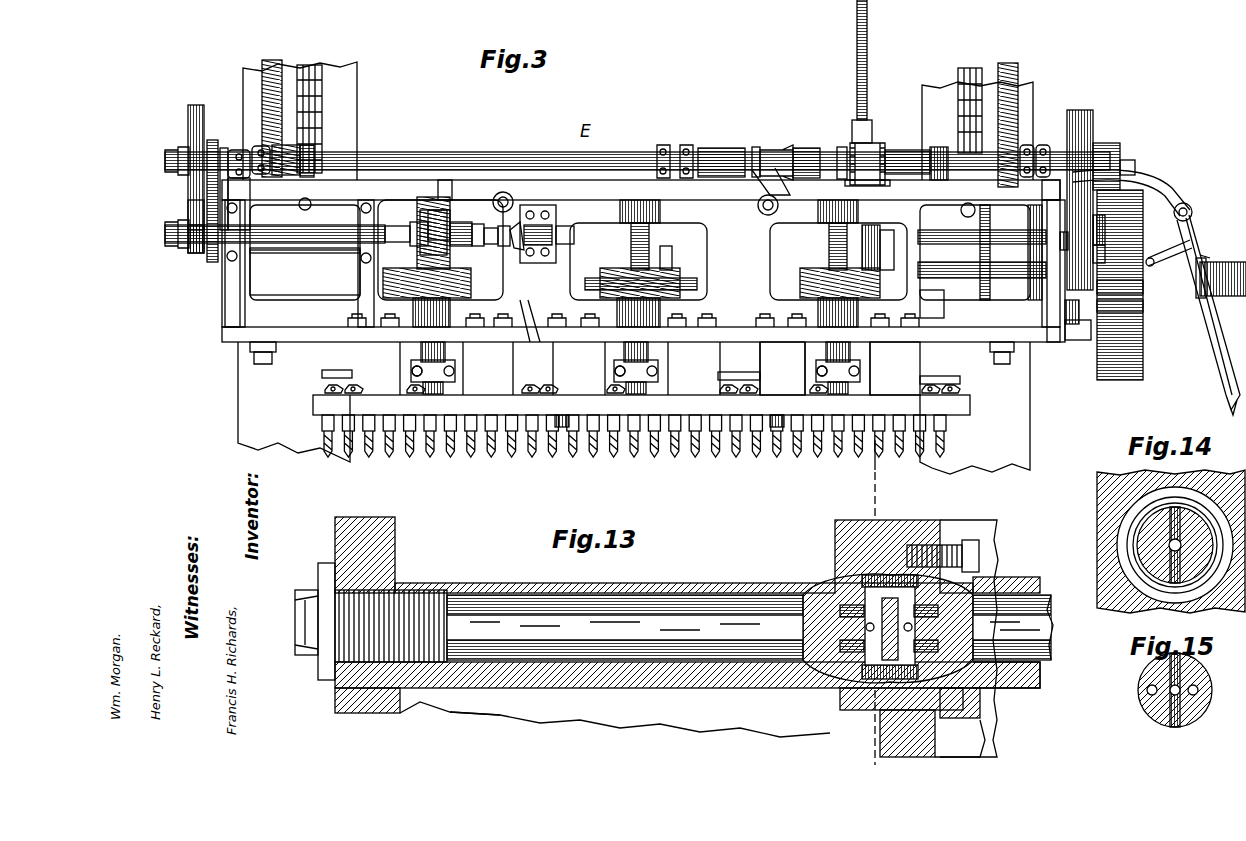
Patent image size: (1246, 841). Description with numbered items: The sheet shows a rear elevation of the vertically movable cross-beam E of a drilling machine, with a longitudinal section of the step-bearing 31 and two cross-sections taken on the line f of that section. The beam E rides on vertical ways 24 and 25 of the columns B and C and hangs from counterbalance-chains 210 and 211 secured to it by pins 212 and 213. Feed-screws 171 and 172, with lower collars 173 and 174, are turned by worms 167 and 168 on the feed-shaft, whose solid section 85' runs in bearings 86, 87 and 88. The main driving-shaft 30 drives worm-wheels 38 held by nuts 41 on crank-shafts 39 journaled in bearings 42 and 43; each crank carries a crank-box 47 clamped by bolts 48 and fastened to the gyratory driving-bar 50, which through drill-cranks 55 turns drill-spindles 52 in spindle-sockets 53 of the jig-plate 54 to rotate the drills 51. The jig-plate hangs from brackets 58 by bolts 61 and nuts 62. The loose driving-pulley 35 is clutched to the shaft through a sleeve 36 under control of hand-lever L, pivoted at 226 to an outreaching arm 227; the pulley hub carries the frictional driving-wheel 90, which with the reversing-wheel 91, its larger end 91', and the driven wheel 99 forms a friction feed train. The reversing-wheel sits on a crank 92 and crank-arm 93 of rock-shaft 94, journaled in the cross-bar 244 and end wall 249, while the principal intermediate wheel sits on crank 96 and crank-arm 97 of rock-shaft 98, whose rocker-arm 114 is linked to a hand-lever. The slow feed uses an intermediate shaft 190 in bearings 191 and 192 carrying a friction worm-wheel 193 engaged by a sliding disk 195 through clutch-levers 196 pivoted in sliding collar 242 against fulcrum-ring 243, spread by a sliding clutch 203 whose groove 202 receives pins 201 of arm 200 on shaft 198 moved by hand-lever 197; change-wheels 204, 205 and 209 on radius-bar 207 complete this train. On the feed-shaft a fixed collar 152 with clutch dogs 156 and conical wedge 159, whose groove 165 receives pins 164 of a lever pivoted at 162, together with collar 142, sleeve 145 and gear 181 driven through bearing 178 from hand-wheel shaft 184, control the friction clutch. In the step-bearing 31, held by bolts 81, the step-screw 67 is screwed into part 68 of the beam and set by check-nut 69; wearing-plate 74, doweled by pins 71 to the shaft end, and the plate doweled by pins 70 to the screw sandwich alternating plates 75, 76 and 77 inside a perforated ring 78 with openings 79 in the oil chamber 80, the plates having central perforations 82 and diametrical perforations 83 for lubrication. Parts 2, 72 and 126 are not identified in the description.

In FIG. 3, the shaft 2 is at (1222, 285).
In FIG. 3, the vertical way 24 is at (340, 96).
In FIG. 3, the vertical way 25 is at (922, 96).
In FIG. 3, the main driving-shaft 30 is at (688, 278).
In FIG. 13, the main driving-shaft 30 is at (1045, 640).
In FIG. 3, the step-bearing 31 is at (360, 280).
In FIG. 13, the step-bearing 31 is at (1012, 688).
In FIG. 3, the driving-pulley 35 is at (1118, 380).
In FIG. 3, the sleeve 36 is at (1180, 262).
In FIG. 3, the worm-wheel 38 is at (465, 298).
In FIG. 3, the crank-shaft 39 is at (445, 180).
In FIG. 3, the nut 41 is at (418, 255).
In FIG. 3, the upper bearing 42 is at (660, 212).
In FIG. 3, the lower bearing 43 is at (660, 310).
In FIG. 3, the crank-box 47 is at (411, 362).
In FIG. 3, the bolt 48 is at (452, 368).
In FIG. 3, the gyratory driving-bar 50 is at (322, 372).
In FIG. 3, the drill 51 is at (600, 455).
In FIG. 3, the drill-spindle 52 is at (635, 457).
In FIG. 3, the spindle-socket 53 is at (718, 457).
In FIG. 3, the jig-plate 54 is at (313, 404).
In FIG. 3, the drill-crank 55 is at (325, 385).
In FIG. 3, the bracket 58 is at (840, 368).
In FIG. 3, the lower bolt 61 is at (590, 316).
In FIG. 3, the nut 62 is at (588, 415).
In FIG. 13, the step-screw 67 is at (738, 595).
In FIG. 3, the part of the beam 68 is at (300, 295).
In FIG. 13, the part of the beam 68 is at (590, 675).
In FIG. 13, the check-nut 69 is at (322, 575).
In FIG. 13, the dowel-pin 70 is at (830, 665).
In FIG. 13, the dowel-pin 71 is at (975, 590).
In FIG. 15, the pin hole 72 is at (1150, 686).
In FIG. 13, the wearing-plate 74 is at (960, 695).
In FIG. 15, the wearing-plate 74 is at (1150, 705).
In FIG. 3, the wearing-plate 75 is at (1060, 222).
In FIG. 13, the wearing-plate 75 is at (838, 562).
In FIG. 14, the wearing-plate 75 is at (1195, 520).
In FIG. 13, the wearing-plate 76 is at (980, 560).
In FIG. 13, the wearing-plate 77 is at (895, 592).
In FIG. 13, the ring 78 is at (862, 580).
In FIG. 14, the ring 78 is at (1130, 556).
In FIG. 14, the opening 79 is at (1133, 580).
In FIG. 13, the chamber 80 is at (868, 590).
In FIG. 14, the chamber 80 is at (1122, 535).
In FIG. 13, the bolt 81 is at (970, 540).
In FIG. 14, the central perforation 82 is at (1178, 552).
In FIG. 15, the central perforation 82 is at (1180, 696).
In FIG. 14, the diametrical perforation 83 is at (1160, 522).
In FIG. 15, the diametrical perforation 83 is at (1166, 724).
In FIG. 3, the solid part of feed-shaft 85' is at (637, 146).
In FIG. 3, the bearing 86 is at (240, 178).
In FIG. 3, the bearing 87 is at (1046, 180).
In FIG. 3, the bearing 88 is at (675, 145).
In FIG. 3, the frictional gear 90 is at (1100, 254).
In FIG. 3, the reversing friction-wheel 91 is at (1120, 289).
In FIG. 3, the larger end of reversing-wheel 91' is at (1120, 309).
In FIG. 3, the crank 92 is at (1072, 338).
In FIG. 3, the crank-arm 93 is at (1035, 296).
In FIG. 3, the rock-shaft 94 is at (960, 280).
In FIG. 3, the crank 96 is at (1105, 232).
In FIG. 3, the crank-arm 97 is at (1060, 243).
In FIG. 3, the rock-shaft 98 is at (946, 244).
In FIG. 3, the driven friction-wheel 99 is at (1078, 110).
In FIG. 3, the rocker-arm 114 is at (873, 226).
In FIG. 3, the sleeve 126 is at (722, 148).
In FIG. 3, the collar 142 is at (940, 147).
In FIG. 3, the sleeve 145 is at (905, 150).
In FIG. 3, the collar 152 is at (840, 147).
In FIG. 3, the clutch dog 156 is at (800, 148).
In FIG. 3, the wedge 159 is at (776, 150).
In FIG. 3, the pivot 162 is at (762, 212).
In FIG. 3, the pin 164 is at (760, 180).
In FIG. 3, the circumferential groove 165 is at (756, 147).
In FIG. 3, the worm 167 is at (275, 150).
In FIG. 3, the worm 168 is at (1030, 145).
In FIG. 3, the feed-screw 171 is at (272, 60).
In FIG. 3, the feed-screw 172 is at (1008, 63).
In FIG. 3, the collar 173 is at (252, 350).
In FIG. 3, the collar 174 is at (1000, 222).
In FIG. 3, the bearing 178 is at (870, 145).
In FIG. 3, the gear 181 is at (870, 186).
In FIG. 3, the hand-wheel shaft 184 is at (857, 48).
In FIG. 3, the intermediate shaft 190 is at (398, 226).
In FIG. 3, the long bearing 191 is at (302, 240).
In FIG. 3, the bearing 192 is at (548, 256).
In FIG. 3, the worm-wheel 193 is at (436, 210).
In FIG. 3, the sliding friction-disk 195 is at (462, 222).
In FIG. 3, the clutch-lever 196 is at (490, 244).
In FIG. 3, the hand-lever 197 is at (537, 330).
In FIG. 3, the shaft 198 is at (506, 196).
In FIG. 3, the arm 200 is at (538, 205).
In FIG. 3, the pin 201 is at (518, 250).
In FIG. 3, the groove 202 is at (504, 246).
In FIG. 3, the sliding clutch 203 is at (478, 224).
In FIG. 3, the change-wheel 204 is at (195, 253).
In FIG. 3, the intermediate wheel 205 is at (188, 212).
In FIG. 3, the radius-bar 207 is at (207, 191).
In FIG. 3, the change-wheel 209 is at (196, 105).
In FIG. 3, the counterbalance-chain 210 is at (310, 65).
In FIG. 3, the counterbalance-chain 211 is at (968, 68).
In FIG. 3, the pin 212 is at (311, 204).
In FIG. 3, the pin 213 is at (961, 210).
In FIG. 3, the pivot 226 is at (1192, 211).
In FIG. 3, the outreaching arm 227 is at (1158, 178).
In FIG. 3, the sliding collar 242 is at (498, 195).
In FIG. 3, the fulcrum-ring 243 is at (450, 300).
In FIG. 3, the cross-bar 244 is at (918, 300).
In FIG. 3, the end wall 249 is at (1074, 324).
In FIG. 3, the column B is at (238, 392).
In FIG. 3, the column C is at (986, 408).
In FIG. 13, the movable beam E is at (704, 722).
In FIG. 14, the movable beam E is at (1110, 596).
In FIG. 3, the hand-lever L is at (1222, 340).
In FIG. 3, the section line f is at (869, 457).
In FIG. 13, the section line f is at (865, 609).